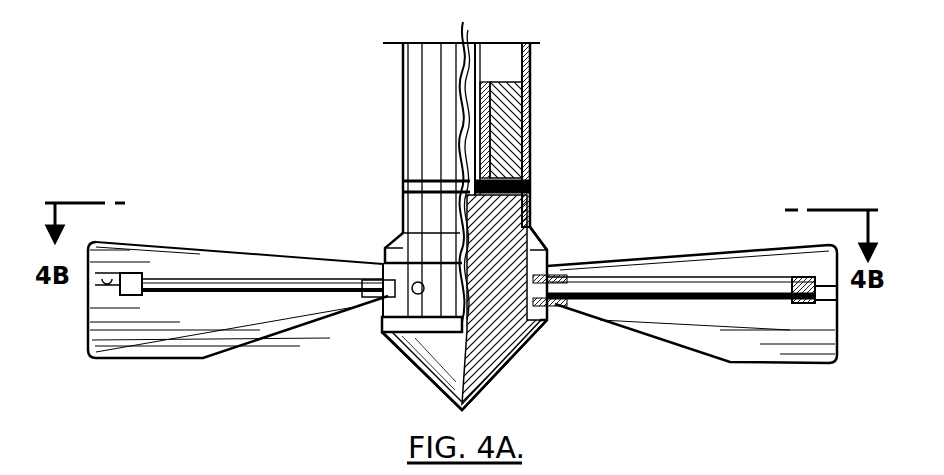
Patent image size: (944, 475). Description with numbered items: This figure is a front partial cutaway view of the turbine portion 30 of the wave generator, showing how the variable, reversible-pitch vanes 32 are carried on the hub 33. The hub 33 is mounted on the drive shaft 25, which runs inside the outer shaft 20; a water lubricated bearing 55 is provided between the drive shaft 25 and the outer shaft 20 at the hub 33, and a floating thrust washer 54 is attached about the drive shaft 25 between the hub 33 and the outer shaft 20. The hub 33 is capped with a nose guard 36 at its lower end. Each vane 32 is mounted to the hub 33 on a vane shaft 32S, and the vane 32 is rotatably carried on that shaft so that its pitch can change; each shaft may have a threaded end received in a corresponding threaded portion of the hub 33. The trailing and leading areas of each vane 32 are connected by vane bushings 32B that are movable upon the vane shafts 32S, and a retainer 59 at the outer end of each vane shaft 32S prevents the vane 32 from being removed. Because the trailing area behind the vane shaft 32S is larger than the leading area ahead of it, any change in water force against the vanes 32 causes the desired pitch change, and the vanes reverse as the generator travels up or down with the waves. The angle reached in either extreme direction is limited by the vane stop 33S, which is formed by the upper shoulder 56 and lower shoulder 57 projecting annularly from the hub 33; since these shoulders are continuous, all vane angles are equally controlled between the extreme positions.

The outer shaft 20 is at (531, 62).
The drive shaft 25 is at (465, 70).
The deflector assembly 30 is at (326, 163).
The turbine vane 32 is at (310, 328).
The vane bushing 32B is at (130, 273).
The vane shaft 32S is at (280, 290).
The hub 33 is at (515, 230).
The vane stop 33S is at (548, 256).
The conical nose 36 is at (425, 382).
The floating thrust washer 54 is at (529, 192).
The water lubricated bearing 55 is at (505, 118).
The upper annular projecting shoulder 56 is at (398, 246).
The lower annular projecting shoulder 57 is at (395, 340).
The retainer 59 is at (830, 292).